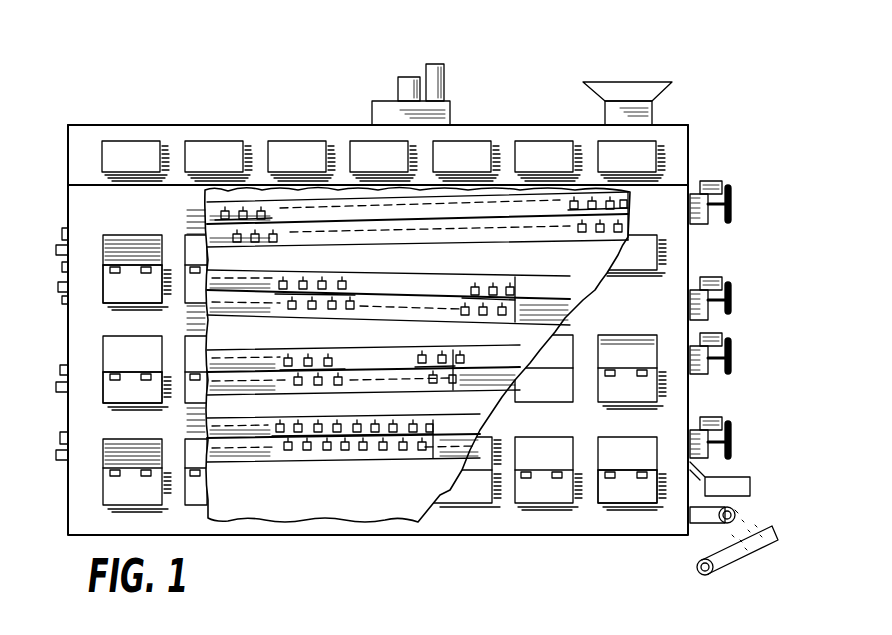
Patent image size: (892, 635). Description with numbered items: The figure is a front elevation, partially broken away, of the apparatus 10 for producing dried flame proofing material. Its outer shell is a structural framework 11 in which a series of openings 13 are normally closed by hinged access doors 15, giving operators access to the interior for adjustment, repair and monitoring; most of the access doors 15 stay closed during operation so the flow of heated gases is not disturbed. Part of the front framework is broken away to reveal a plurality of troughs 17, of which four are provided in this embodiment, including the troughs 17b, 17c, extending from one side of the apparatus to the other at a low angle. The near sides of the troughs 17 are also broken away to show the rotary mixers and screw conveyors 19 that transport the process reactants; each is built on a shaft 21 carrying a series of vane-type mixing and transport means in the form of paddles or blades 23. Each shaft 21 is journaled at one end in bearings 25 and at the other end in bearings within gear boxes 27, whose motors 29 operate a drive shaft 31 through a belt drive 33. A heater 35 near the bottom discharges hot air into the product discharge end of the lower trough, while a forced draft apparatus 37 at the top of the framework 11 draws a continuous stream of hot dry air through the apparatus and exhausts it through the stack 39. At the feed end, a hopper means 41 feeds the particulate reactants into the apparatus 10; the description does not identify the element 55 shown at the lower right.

The apparatus 10 is at (232, 116).
The structural framework 11 is at (165, 125).
The openings 13 is at (145, 141).
The hinged access doors 15 is at (148, 292).
The troughs 17 is at (316, 470).
The trough 17b is at (402, 432).
The trough 17c is at (318, 365).
The rotary mixers and screw conveyors 19 is at (300, 240).
The shaft 21 is at (456, 228).
The paddles or blades 23 is at (566, 244).
The bearings 25 is at (50, 292).
The gear boxes 27 is at (700, 375).
The motors 29 is at (716, 334).
The drive shaft 31 is at (720, 368).
The belt drive 33 is at (734, 346).
The heater 35 is at (720, 480).
The forced draft apparatus 37 is at (450, 110).
The stack 39 is at (444, 78).
The hopper means 41 is at (617, 85).
The discharge conduit 55 is at (720, 552).